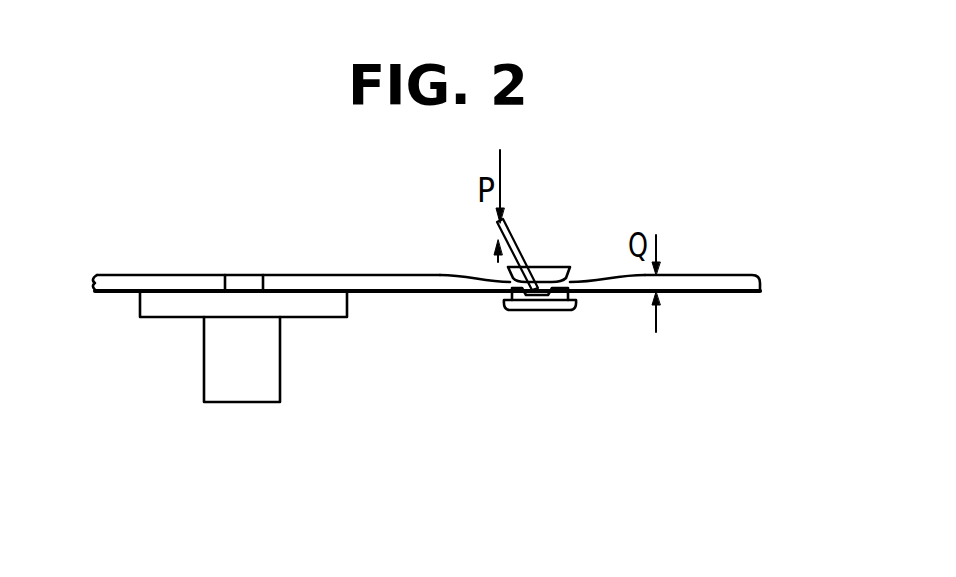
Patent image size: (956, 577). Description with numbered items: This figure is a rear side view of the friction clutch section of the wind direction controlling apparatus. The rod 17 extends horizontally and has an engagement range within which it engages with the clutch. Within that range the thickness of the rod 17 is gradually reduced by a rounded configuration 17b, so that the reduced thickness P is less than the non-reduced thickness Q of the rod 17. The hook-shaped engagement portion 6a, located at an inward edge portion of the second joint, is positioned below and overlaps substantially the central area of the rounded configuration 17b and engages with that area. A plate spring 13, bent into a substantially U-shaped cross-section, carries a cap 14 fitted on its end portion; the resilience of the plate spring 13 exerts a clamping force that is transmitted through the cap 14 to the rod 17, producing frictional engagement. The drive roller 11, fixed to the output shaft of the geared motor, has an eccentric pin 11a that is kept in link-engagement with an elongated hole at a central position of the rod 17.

The drive roller 11 is at (280, 350).
The eccentric pin 11a is at (237, 275).
The rod 17 is at (320, 275).
The rounded configuration 17b is at (470, 275).
The cap 14 is at (557, 267).
The hook-shaped engagement portion 6a is at (508, 300).
The plate spring 13 is at (572, 312).